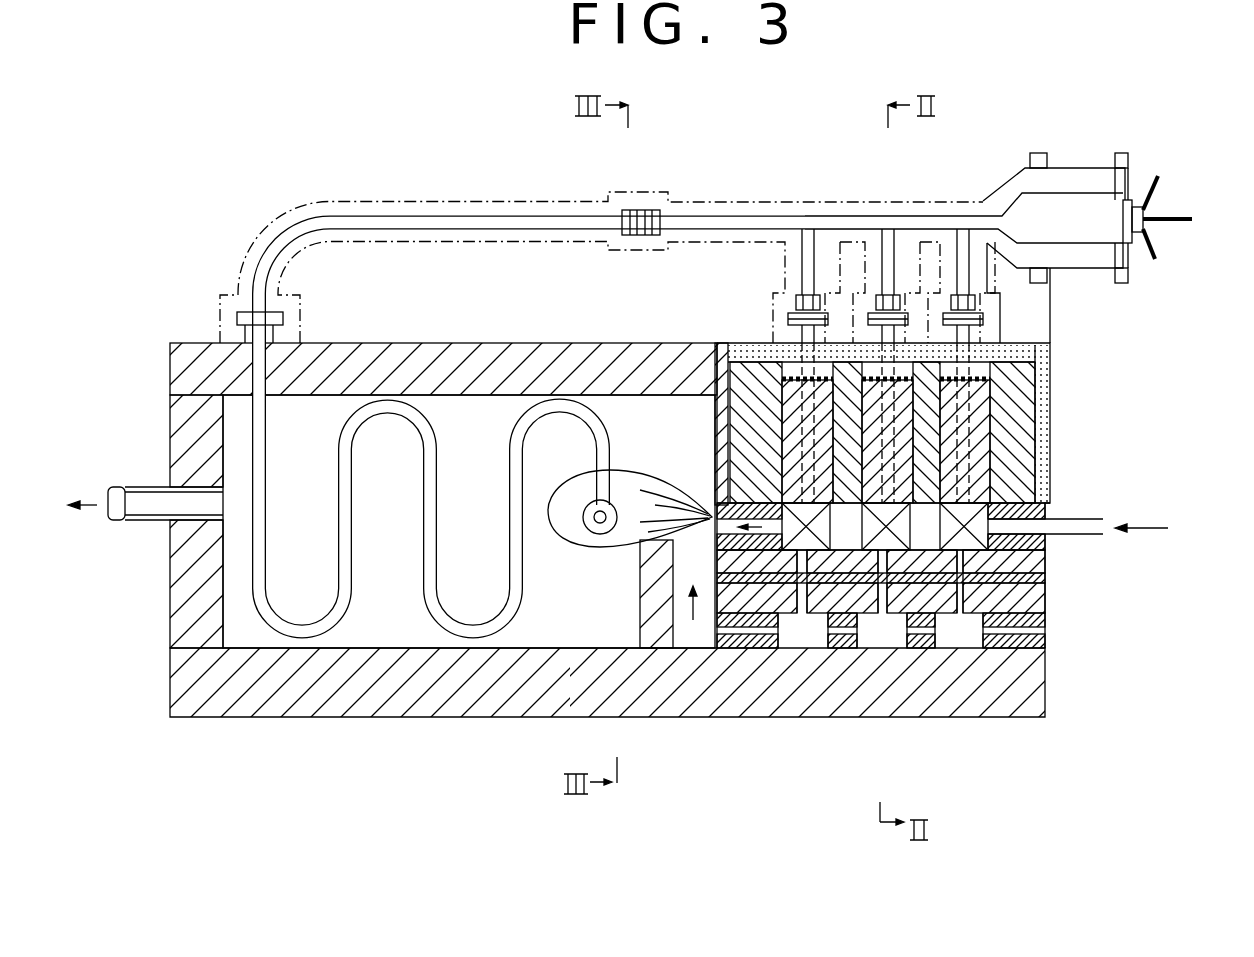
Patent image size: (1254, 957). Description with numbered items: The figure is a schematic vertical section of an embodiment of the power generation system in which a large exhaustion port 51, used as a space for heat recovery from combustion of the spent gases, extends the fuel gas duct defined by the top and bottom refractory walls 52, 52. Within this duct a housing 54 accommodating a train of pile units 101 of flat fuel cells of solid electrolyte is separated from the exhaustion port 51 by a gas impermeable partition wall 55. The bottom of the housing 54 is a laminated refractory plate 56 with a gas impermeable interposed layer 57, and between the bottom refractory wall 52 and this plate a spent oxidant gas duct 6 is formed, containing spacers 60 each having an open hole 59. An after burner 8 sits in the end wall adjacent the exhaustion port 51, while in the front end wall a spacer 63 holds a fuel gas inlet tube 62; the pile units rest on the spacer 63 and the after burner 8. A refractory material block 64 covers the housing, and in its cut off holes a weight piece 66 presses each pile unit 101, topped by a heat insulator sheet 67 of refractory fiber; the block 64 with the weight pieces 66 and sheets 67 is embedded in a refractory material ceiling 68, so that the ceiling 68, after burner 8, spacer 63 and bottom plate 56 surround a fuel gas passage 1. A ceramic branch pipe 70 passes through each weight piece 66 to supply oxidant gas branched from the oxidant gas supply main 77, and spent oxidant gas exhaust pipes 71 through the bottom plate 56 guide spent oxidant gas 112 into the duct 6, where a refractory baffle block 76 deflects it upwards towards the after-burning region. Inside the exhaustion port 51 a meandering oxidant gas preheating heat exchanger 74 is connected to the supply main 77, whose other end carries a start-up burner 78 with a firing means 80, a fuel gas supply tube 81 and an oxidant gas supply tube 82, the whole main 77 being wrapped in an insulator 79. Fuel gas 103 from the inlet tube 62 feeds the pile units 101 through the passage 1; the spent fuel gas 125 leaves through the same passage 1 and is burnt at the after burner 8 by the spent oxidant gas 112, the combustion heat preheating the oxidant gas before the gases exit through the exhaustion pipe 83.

The fuel gas passage 1 is at (715, 490).
The spent oxidant gas duct 6 is at (1045, 666).
The after burner 8 is at (705, 560).
The exhaustion port 51 is at (450, 400).
The refractory wall 52 is at (374, 362).
The housing 54 is at (800, 350).
The partition wall 55 is at (725, 370).
The laminated refractory plate 56 is at (825, 600).
The gas impermeable interposed layer 57 is at (1035, 578).
The open hole 59 is at (730, 590).
The spacer 60 is at (755, 590).
The fuel gas inlet tube 62 is at (1080, 517).
The spacer 63 is at (1050, 510).
The refractory material block 64 is at (735, 355).
The weight piece 66 is at (842, 400).
The heat insulator sheet 67 is at (848, 372).
The refractory material ceiling 68 is at (1015, 338).
The branch pipe 70 is at (895, 300).
The spent oxidant gas exhaust pipe 71 is at (1040, 618).
The oxidant gas preheating heat exchanger 74 is at (330, 632).
The refractory baffle block 76 is at (660, 650).
The oxidant gas supply main 77 is at (345, 215).
The start-up burner 78 is at (1090, 187).
The insulator 79 is at (428, 203).
The firing means 80 is at (1162, 178).
The fuel gas supply tube 81 is at (1195, 222).
The oxidant gas supply tube 82 is at (1160, 258).
The exhaustion pipe 83 is at (120, 522).
The pile unit 101 is at (1030, 455).
The fuel gas 103 is at (1142, 533).
The spent oxidant gas 112 is at (800, 620).
The spent fuel gas 125 is at (742, 630).